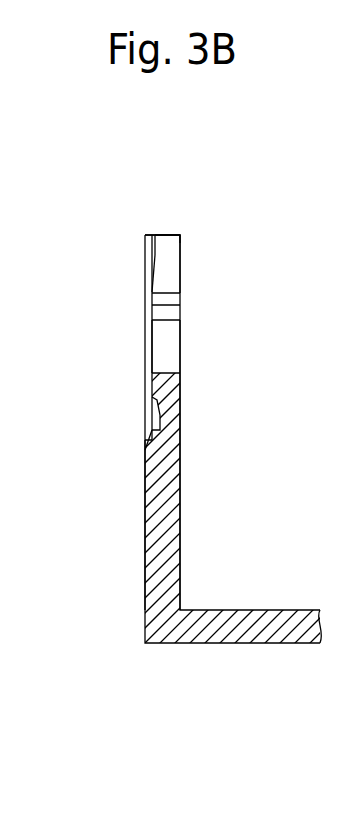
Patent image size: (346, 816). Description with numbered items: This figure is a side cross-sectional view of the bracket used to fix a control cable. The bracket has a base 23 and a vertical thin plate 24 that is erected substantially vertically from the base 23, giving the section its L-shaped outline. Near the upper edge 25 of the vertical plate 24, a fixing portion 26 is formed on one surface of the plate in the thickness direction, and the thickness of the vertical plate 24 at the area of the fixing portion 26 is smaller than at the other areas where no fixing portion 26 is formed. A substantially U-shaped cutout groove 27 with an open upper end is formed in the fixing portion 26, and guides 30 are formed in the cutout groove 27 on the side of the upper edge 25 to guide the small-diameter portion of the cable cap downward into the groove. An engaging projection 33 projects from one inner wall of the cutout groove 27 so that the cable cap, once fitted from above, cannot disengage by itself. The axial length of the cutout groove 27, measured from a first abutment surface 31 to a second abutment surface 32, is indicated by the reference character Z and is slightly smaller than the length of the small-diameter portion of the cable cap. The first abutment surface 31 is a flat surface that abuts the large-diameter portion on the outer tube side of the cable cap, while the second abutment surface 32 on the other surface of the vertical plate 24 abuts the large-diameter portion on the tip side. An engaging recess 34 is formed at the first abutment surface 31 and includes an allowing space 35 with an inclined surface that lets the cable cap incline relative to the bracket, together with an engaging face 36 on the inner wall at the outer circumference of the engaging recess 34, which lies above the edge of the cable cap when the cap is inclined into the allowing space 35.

The base 23 is at (243, 644).
The vertical thin plate 24 is at (182, 519).
The upper edge 25 is at (173, 233).
The fixing portion 26 is at (150, 440).
The cutout groove 27 is at (182, 357).
The guides 30 is at (183, 243).
The first abutment surface 31 is at (147, 378).
The second abutment surface 32 is at (182, 425).
The engaging projection 33 is at (183, 313).
The engaging recess 34 is at (153, 259).
The allowing space 35 is at (160, 272).
The engaging face 36 is at (157, 234).
The axial length of the cutout groove Z is at (153, 125).